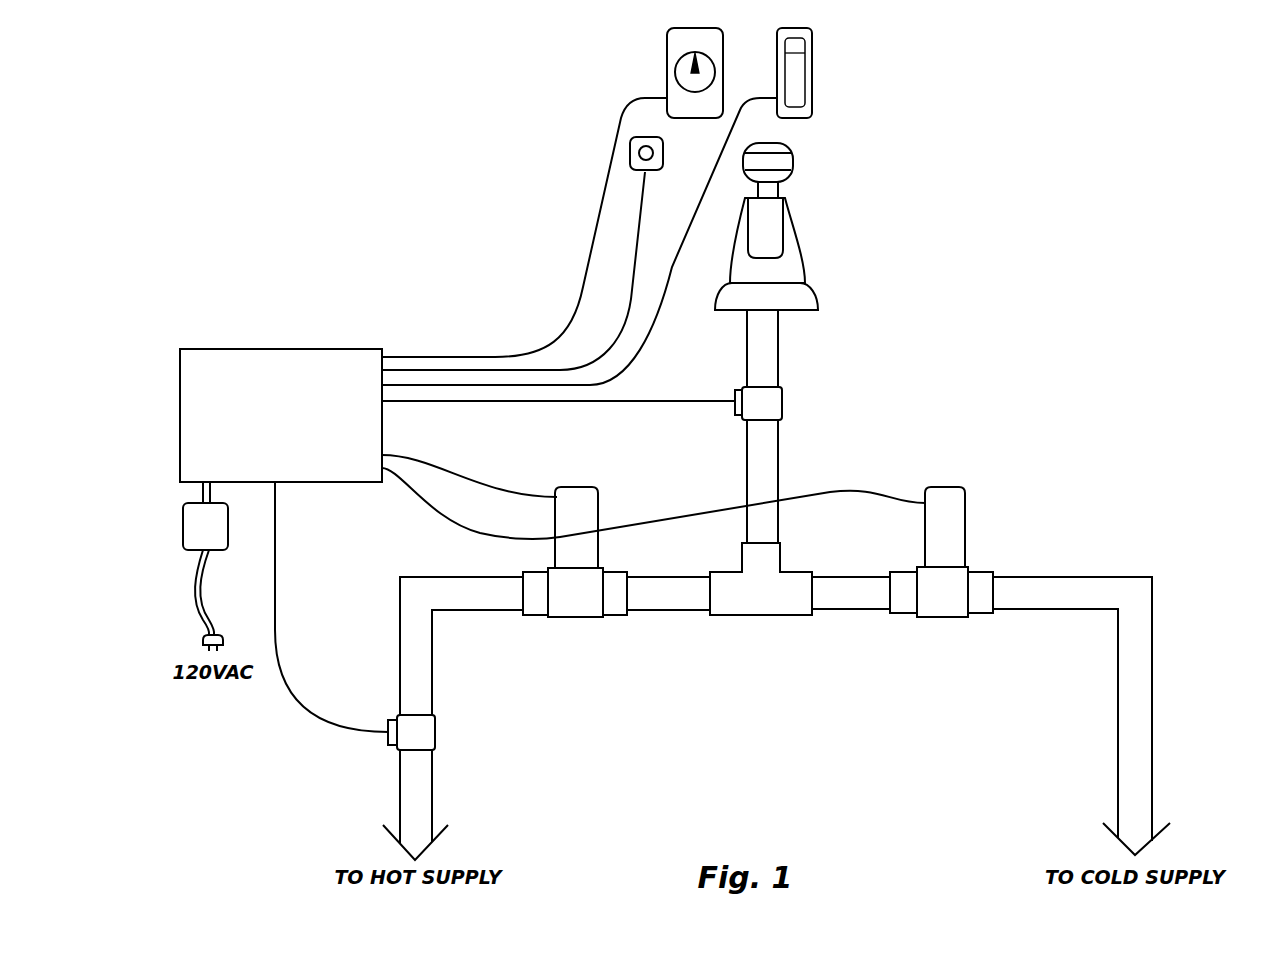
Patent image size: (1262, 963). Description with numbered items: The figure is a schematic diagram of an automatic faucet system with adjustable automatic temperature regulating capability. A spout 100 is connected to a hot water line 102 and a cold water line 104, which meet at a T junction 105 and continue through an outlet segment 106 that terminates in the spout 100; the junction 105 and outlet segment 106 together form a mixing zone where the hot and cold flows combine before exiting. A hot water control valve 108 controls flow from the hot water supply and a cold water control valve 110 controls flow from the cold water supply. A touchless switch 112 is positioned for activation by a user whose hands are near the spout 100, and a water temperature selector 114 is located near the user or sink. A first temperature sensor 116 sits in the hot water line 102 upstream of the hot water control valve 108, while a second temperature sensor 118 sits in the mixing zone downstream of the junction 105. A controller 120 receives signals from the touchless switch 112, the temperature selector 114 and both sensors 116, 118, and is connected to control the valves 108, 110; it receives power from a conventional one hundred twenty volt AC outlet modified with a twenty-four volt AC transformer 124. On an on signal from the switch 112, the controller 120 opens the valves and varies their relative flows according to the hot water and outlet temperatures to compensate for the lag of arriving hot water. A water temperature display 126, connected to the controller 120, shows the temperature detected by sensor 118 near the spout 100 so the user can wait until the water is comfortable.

The outlet or spout 100 is at (805, 250).
The hot water line 102 is at (400, 613).
The cold water line 104 is at (1030, 609).
The T junction 105 is at (768, 617).
The outlet segment 106 is at (778, 457).
The hot water control valve 108 is at (598, 512).
The cold water control valve 110 is at (965, 532).
The touchless switch 112 is at (630, 153).
The water temperature selector 114 is at (667, 60).
The first temperature sensor 116 is at (386, 740).
The second temperature sensor 118 is at (735, 390).
The controller 120 is at (288, 349).
The 24 volt AC transformer 124 is at (228, 540).
The water temperature display 126 is at (812, 87).